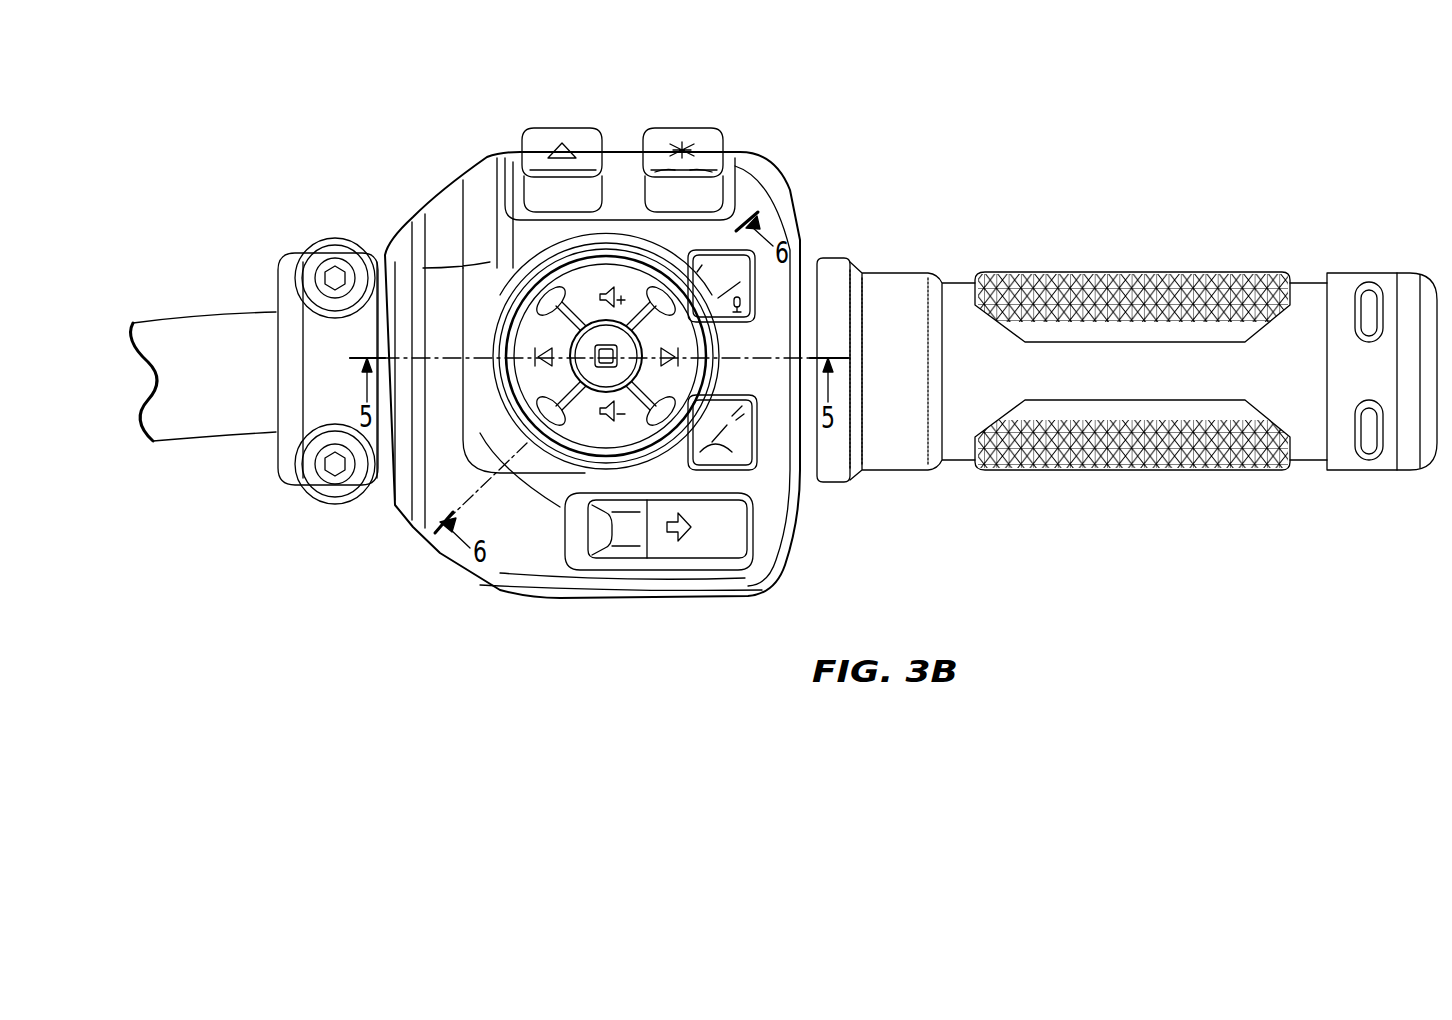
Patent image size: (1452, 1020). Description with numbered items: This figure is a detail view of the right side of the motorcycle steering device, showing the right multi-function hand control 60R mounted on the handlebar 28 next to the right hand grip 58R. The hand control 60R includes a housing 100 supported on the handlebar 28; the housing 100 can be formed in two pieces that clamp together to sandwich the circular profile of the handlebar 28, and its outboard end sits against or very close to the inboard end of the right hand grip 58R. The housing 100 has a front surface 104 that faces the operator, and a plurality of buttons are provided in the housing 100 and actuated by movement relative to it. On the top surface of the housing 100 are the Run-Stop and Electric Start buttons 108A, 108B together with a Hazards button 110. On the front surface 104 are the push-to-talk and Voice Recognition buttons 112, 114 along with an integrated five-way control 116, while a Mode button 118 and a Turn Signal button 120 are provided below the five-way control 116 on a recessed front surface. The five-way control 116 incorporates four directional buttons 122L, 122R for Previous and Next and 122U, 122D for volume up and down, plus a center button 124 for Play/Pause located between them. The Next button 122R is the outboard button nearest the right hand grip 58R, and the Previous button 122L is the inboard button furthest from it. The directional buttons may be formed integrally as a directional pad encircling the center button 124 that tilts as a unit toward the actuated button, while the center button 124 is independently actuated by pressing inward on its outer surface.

The handlebar 28 is at (232, 345).
The right multi-function hand control 60R is at (437, 125).
The housing 100 is at (440, 208).
The front surface 104 is at (497, 423).
The Run-Stop button 108A is at (684, 148).
The Electric Start button 108B is at (698, 178).
The Hazards button 110 is at (549, 137).
The push-to-talk (PTT) button 112 is at (740, 302).
The Voice Recognition button 114 is at (730, 445).
The integrated 5-way control 116 is at (517, 322).
The Mode button 118 is at (605, 538).
The Turn Signal button 120 is at (690, 530).
The directional button (volume UP) 122U is at (612, 286).
The directional button (volume DOWN) 122D is at (615, 427).
The directional button (Previous) 122L is at (548, 372).
The directional button (Next) 122R is at (680, 356).
The center button (Play/Pause) 124 is at (720, 248).
The right hand grip 58R is at (1082, 472).